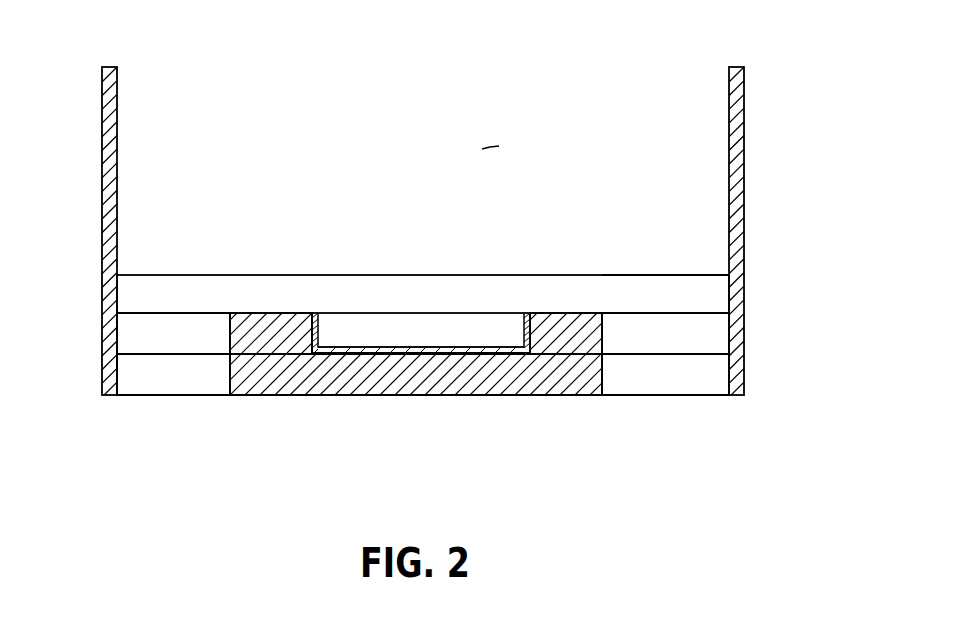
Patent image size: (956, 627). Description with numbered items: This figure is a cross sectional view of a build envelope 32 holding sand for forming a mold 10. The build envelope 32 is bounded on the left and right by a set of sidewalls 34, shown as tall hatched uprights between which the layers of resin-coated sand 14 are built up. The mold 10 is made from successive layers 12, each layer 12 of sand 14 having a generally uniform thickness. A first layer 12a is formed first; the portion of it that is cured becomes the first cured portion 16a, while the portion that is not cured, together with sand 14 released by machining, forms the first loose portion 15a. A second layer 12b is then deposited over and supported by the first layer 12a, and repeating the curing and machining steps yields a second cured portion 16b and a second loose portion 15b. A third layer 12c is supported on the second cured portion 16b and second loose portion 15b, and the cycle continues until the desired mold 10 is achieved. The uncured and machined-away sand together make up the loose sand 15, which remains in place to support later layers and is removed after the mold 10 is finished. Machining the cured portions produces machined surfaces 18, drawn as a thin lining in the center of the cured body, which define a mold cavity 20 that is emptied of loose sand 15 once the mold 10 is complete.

The mold 10 is at (413, 327).
The layer 12 is at (720, 351).
The first layer 12a is at (675, 363).
The second layer 12b is at (653, 357).
The third layer 12c is at (683, 293).
The resin-coated sand 14 is at (203, 298).
The loose portion 15 is at (134, 377).
The first loose portion 15a is at (127, 382).
The second loose portion 15b is at (127, 343).
The first cured portion 16a is at (503, 378).
The second cured portion 16b is at (573, 325).
The machined surfaces 18 is at (355, 345).
The mold cavities 20 is at (463, 330).
The build envelope 32 is at (490, 143).
The sidewalls 34 is at (112, 163).